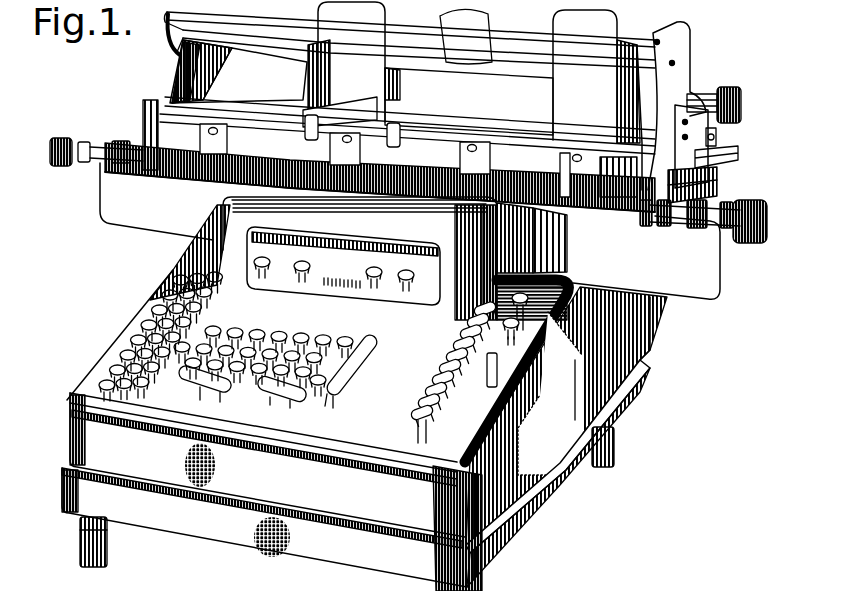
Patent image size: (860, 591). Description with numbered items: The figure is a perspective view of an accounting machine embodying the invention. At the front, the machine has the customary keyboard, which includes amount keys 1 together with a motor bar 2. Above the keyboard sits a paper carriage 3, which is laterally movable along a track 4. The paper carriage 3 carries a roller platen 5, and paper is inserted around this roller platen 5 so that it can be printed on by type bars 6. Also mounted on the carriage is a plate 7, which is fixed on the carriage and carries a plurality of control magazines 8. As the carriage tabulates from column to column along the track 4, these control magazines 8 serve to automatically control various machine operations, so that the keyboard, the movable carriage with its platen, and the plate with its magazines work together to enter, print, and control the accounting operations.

The amount keys 1 is at (310, 347).
The motor bar 2 is at (370, 349).
The paper carriage 3 is at (683, 63).
The track 4 is at (717, 200).
The roller platen 5 is at (552, 208).
The type bars 6 is at (383, 192).
The plate 7 is at (738, 163).
The control magazines 8 is at (718, 142).